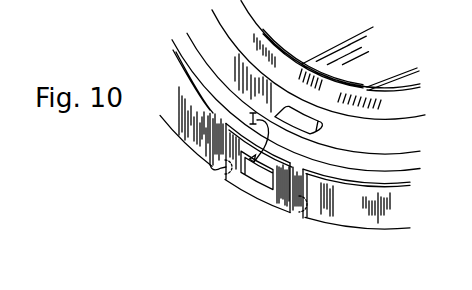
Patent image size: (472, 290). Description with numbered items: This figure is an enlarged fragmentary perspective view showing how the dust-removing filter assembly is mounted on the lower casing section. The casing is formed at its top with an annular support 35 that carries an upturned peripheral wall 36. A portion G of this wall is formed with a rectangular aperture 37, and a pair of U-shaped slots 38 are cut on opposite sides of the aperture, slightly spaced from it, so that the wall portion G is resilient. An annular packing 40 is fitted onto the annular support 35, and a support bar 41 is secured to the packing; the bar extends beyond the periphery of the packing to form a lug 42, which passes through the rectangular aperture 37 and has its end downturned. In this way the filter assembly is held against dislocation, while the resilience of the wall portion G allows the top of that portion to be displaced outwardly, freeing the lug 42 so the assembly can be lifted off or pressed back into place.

The annular support 35 is at (388, 183).
The upturned peripheral wall 36 is at (345, 220).
The rectangular aperture 37 is at (264, 181).
The U-shaped slots 38 is at (304, 216).
The annular packing 40 is at (251, 30).
The support bar 41 is at (388, 50).
The lug 42 is at (322, 124).
The wall portion G is at (205, 166).